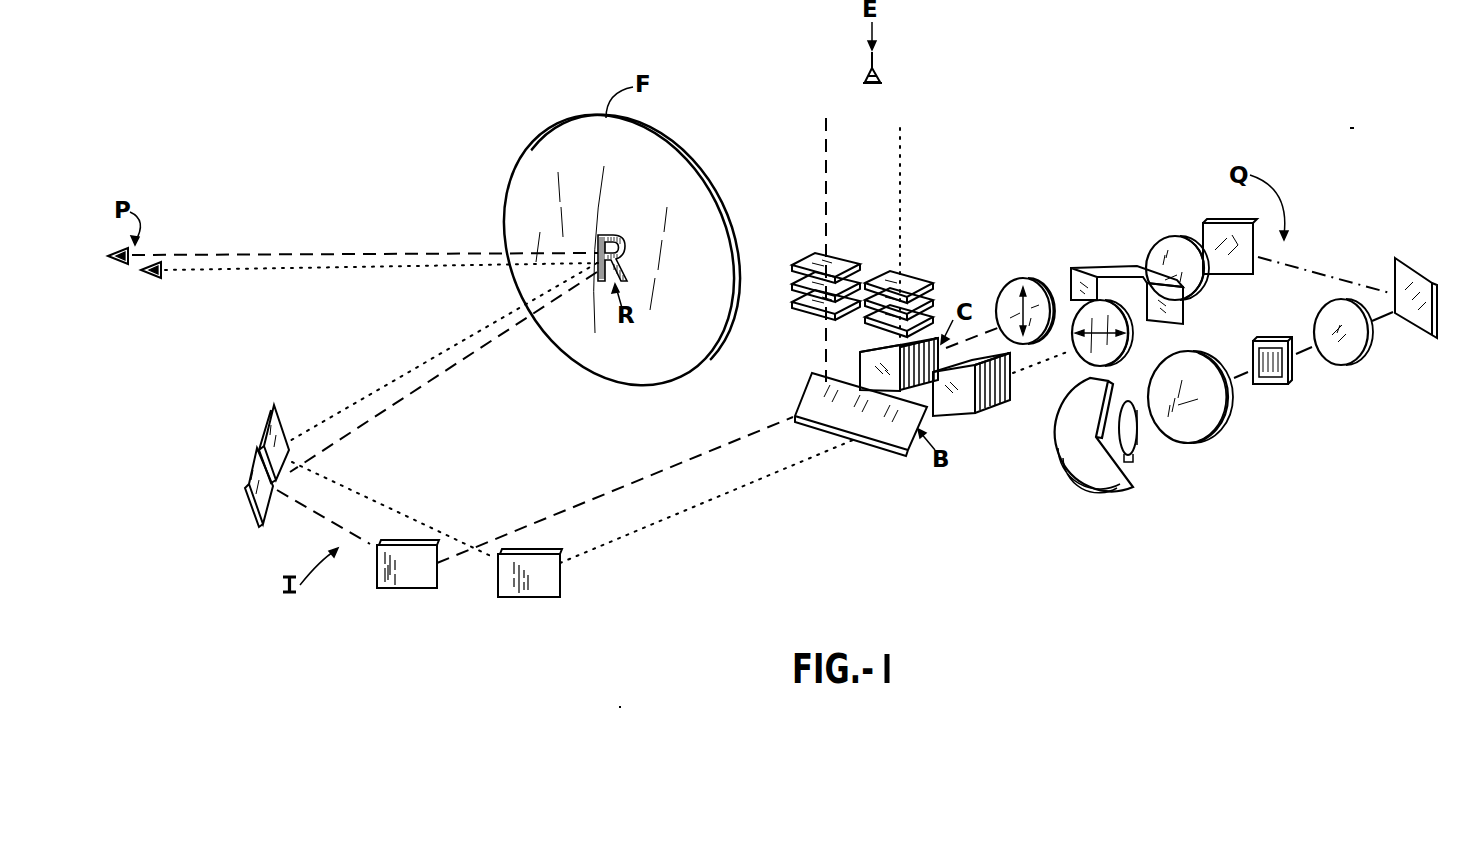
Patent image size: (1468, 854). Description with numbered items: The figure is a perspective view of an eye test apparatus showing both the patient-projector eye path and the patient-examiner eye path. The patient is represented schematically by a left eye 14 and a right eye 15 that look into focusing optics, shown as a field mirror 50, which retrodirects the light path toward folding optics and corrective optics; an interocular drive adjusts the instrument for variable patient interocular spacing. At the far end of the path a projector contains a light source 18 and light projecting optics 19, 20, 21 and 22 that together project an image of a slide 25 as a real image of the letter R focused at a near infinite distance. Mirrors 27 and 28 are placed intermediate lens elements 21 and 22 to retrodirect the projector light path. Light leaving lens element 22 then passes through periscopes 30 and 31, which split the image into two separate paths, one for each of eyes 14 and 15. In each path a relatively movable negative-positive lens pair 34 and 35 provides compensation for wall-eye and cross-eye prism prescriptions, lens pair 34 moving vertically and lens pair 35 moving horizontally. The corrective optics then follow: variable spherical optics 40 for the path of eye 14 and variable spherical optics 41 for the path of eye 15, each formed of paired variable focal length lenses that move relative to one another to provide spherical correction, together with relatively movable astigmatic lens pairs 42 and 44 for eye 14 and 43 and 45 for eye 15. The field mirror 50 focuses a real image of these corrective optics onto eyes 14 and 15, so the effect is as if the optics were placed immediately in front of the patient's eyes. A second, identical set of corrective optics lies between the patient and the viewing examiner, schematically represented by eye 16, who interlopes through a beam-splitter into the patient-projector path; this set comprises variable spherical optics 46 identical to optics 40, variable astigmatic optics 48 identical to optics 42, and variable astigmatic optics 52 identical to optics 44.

The left eye 14 is at (115, 262).
The right eye 15 is at (152, 280).
The eye 16 is at (882, 78).
The light source 18 is at (1140, 442).
The light projecting optics 19 is at (1074, 484).
The light projecting optics 20 is at (1232, 426).
The lens element 21 is at (1370, 345).
The lens element 22 is at (1160, 240).
The slide 25 is at (1292, 383).
The mirror 27 is at (1421, 258).
The mirror 28 is at (1234, 218).
The periscope 30 is at (1112, 264).
The periscope 31 is at (1184, 312).
The negative-positive lens pair 34 is at (1034, 272).
The negative-positive lens pair 35 is at (1130, 336).
The variable spherical optics 40 is at (862, 370).
The variable spherical optics 41 is at (960, 415).
The variable astigmatic optics 42 is at (876, 355).
The variable astigmatic optics 43 is at (985, 412).
The variable astigmatic optics 44 is at (880, 343).
The variable astigmatic optics 45 is at (1002, 399).
The variable spherical optics 46 is at (795, 306).
The variable astigmatic optics 48 is at (795, 288).
The field mirror 50 is at (669, 141).
The variable astigmatic optics 52 is at (795, 266).